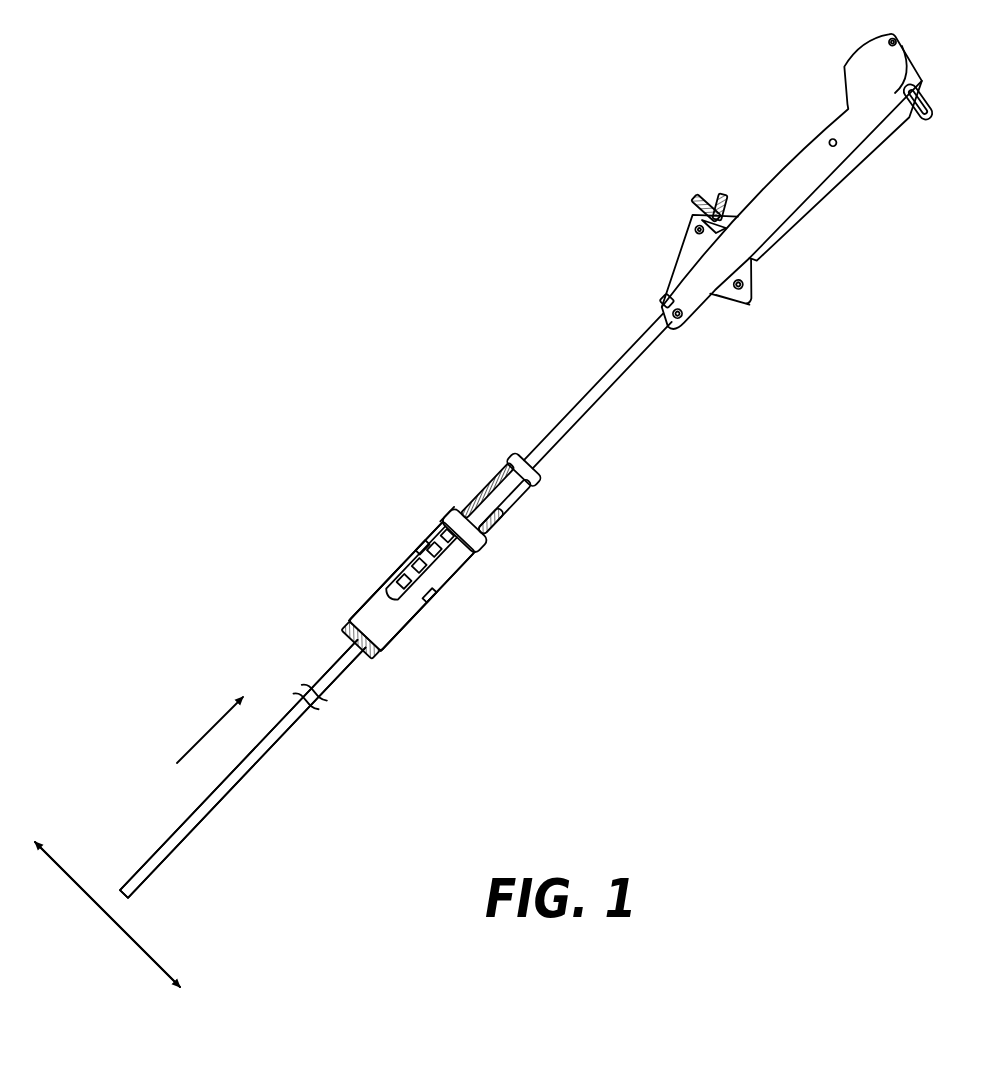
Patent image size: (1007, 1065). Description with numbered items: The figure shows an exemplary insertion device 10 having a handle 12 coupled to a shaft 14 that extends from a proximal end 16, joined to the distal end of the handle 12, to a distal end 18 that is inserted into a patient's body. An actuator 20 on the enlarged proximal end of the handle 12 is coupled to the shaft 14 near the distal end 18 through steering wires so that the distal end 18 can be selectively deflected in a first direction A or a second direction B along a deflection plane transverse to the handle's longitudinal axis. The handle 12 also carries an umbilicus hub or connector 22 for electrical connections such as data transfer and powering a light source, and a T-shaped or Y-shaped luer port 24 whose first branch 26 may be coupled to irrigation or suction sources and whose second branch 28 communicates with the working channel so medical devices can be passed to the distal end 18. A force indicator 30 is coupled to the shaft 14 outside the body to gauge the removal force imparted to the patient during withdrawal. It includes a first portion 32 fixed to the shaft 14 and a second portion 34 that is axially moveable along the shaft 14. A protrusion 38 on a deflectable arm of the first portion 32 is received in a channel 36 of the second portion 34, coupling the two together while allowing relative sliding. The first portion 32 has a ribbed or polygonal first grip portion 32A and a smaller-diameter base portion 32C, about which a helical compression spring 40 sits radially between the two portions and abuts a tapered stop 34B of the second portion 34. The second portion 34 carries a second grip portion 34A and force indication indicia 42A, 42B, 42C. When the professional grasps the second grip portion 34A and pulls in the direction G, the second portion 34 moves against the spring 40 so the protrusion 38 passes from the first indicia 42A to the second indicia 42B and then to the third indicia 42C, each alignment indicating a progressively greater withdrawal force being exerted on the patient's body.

The insertion device 10 is at (391, 251).
The handle 12 is at (803, 142).
The shaft 14 is at (608, 374).
The proximal end 16 is at (660, 305).
The distal end 18 is at (174, 836).
The actuator 20 is at (927, 92).
The umbilicus hub or connector 22 is at (752, 281).
The port 24 is at (705, 188).
The first branch 26 is at (697, 200).
The second branch 28 is at (727, 193).
The force indicator 30 is at (364, 476).
The first portion 32 is at (528, 446).
The first grip portion 32A is at (523, 500).
The base portion 32C is at (352, 640).
The second portion 34 is at (391, 590).
The second grip portion 34A is at (394, 633).
The stop 34B is at (353, 632).
The channel 36 is at (395, 583).
The protrusion 38 is at (456, 530).
The spring 40 is at (452, 568).
The first indicia 42A is at (476, 537).
The second indicia 42B is at (426, 545).
The third indicia 42C is at (425, 595).
The first direction A is at (38, 840).
The second direction B is at (183, 984).
The direction G is at (210, 730).